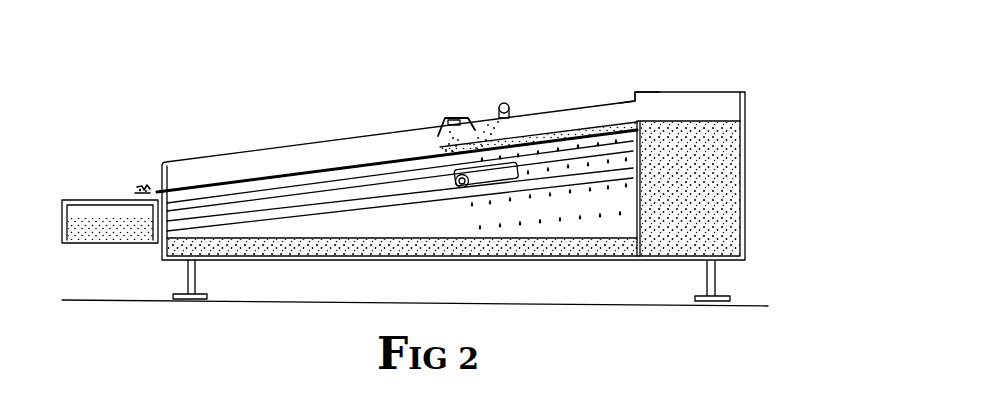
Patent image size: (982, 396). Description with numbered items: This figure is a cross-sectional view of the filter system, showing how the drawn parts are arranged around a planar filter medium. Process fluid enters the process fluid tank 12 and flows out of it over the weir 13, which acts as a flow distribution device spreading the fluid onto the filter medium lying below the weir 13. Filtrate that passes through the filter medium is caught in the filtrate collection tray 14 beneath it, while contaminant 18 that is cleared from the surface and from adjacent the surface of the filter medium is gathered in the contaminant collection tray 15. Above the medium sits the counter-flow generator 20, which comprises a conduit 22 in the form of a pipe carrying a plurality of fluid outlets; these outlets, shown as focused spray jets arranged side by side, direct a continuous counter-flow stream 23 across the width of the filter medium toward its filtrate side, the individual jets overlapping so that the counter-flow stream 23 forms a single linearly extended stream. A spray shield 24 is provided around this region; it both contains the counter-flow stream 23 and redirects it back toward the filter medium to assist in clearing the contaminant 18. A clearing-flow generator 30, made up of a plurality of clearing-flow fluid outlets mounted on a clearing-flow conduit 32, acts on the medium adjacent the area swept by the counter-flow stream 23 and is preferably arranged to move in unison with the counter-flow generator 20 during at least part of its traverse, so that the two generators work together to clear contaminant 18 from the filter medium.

The process fluid tank 12 is at (745, 137).
The weir 13 is at (648, 99).
The filtrate collection tray 14 is at (566, 244).
The contaminant collection tray 15 is at (122, 243).
The contaminant 18 is at (127, 184).
The counter-flow generator 20 is at (458, 190).
The conduit 22 is at (482, 192).
The counter-flow stream 23 is at (436, 164).
The spray shield 24 is at (450, 117).
The clearing-flow generator 30 is at (516, 98).
The clearing-flow conduit 32 is at (499, 103).